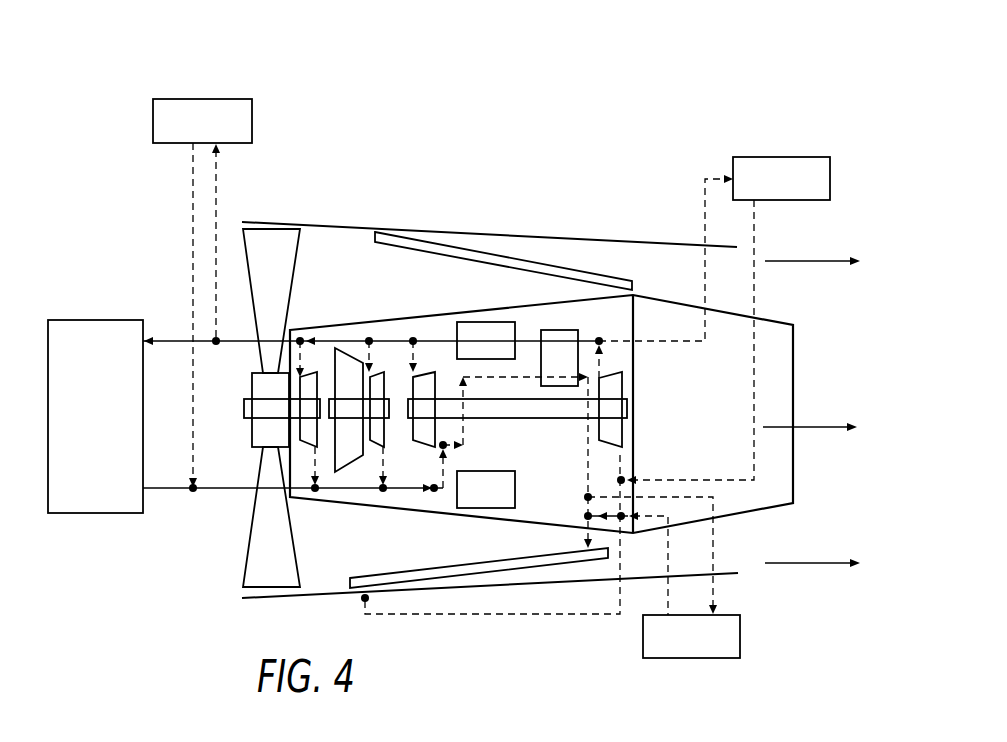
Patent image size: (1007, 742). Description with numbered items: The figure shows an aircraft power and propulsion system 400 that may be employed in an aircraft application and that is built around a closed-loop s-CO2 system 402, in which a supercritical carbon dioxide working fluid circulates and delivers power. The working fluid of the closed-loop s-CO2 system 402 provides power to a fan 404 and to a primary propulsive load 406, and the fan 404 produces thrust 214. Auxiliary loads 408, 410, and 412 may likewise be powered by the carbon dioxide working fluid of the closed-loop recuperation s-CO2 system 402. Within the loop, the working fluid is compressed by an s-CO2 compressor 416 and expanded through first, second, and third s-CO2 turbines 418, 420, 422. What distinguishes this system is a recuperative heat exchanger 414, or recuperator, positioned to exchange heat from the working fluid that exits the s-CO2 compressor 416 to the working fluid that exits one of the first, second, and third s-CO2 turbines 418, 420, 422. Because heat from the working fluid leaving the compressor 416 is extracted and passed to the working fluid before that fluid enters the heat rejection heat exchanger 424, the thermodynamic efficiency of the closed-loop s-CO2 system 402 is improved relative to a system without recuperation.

The aircraft power and propulsion system 400 is at (653, 86).
The closed-loop s-CO2 system 402 is at (186, 531).
The fan 404 is at (284, 228).
The primary propulsive load 406 is at (73, 320).
The auxiliary load 408 is at (232, 99).
The auxiliary load 410 is at (778, 157).
The auxiliary load 412 is at (643, 640).
The recuperative heat exchanger 414 is at (548, 330).
The s-CO2 compressor 416 is at (606, 378).
The first s-CO2 turbine 418 is at (452, 330).
The second s-CO2 turbine 420 is at (373, 447).
The third s-CO2 turbine 422 is at (302, 445).
The heat rejection heat exchanger 424 is at (473, 573).
The thrust 214 is at (813, 606).